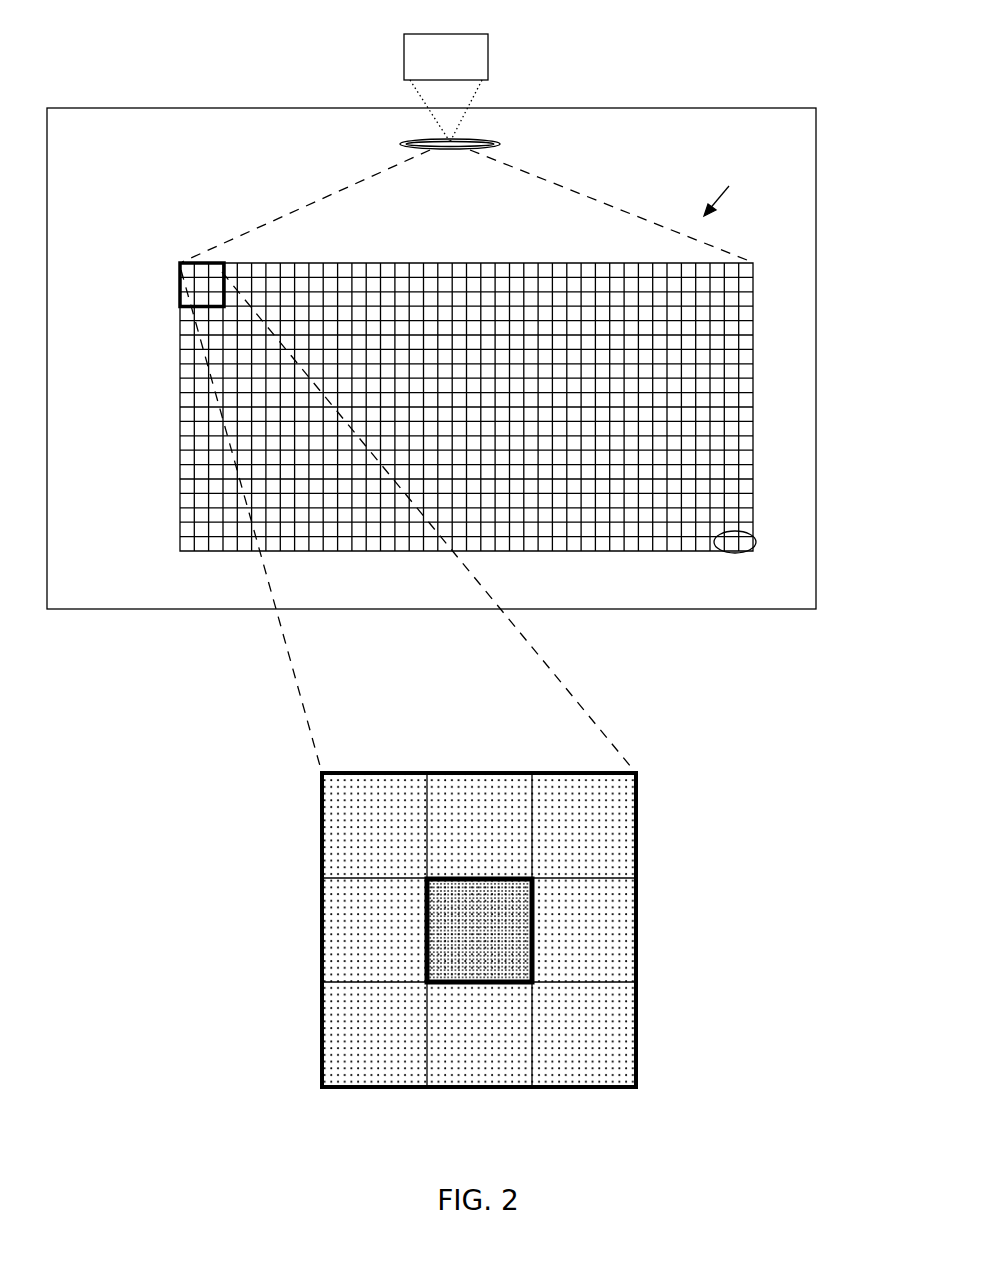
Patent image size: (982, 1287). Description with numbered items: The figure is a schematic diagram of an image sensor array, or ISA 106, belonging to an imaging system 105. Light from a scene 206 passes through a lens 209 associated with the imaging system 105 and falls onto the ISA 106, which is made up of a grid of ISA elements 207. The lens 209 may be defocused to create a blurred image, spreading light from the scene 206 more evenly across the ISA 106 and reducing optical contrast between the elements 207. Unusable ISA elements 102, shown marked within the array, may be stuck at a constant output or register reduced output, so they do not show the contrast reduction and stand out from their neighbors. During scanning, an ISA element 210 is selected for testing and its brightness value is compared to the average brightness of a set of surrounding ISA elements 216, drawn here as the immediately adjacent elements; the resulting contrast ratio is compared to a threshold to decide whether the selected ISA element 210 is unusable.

The unusable ISA elements 102 is at (748, 552).
The imaging system 105 is at (622, 108).
The image sensor array (ISA) 106 is at (735, 198).
The scene 206 is at (488, 44).
The ISA elements 207 is at (167, 266).
The lens 209 is at (500, 144).
The selected ISA element 210 is at (532, 915).
The set of surrounding ISA elements 216 is at (300, 775).